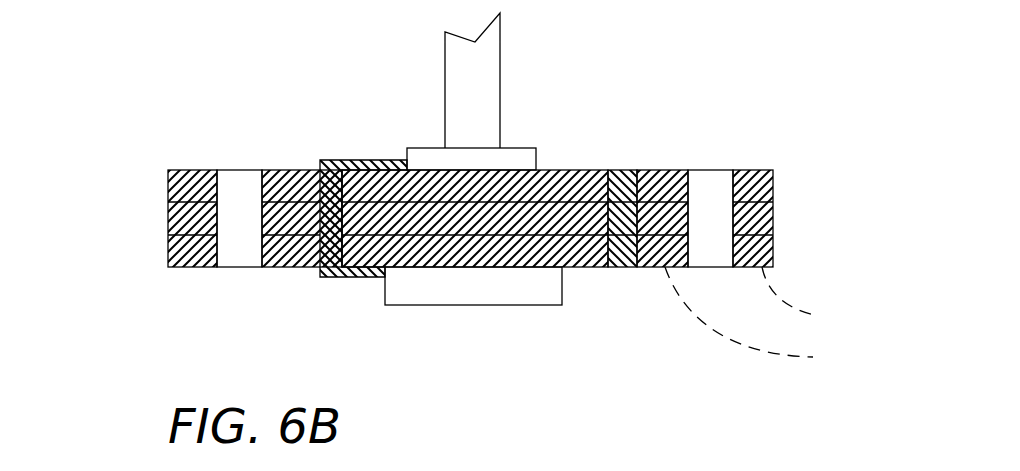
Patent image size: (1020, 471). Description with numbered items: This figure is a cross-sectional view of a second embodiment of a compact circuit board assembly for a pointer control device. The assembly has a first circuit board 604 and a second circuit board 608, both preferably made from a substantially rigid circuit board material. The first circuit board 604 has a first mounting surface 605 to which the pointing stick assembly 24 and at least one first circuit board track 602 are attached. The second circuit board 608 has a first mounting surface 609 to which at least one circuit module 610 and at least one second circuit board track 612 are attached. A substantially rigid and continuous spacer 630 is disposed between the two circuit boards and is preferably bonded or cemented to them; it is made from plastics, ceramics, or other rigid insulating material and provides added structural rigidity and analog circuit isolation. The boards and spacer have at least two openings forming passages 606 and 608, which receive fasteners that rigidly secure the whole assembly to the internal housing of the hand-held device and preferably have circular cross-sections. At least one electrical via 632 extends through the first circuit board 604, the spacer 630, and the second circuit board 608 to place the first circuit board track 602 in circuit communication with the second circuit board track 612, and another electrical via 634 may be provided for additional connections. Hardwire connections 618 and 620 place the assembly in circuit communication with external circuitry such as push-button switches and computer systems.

The shaft 24 is at (510, 86).
The first circuit board track 602 is at (388, 160).
The first circuit board 604 is at (588, 170).
The first mounting surface 605 is at (562, 170).
The passage 606 is at (705, 170).
The second circuit board 608 is at (248, 245).
The first mounting surface 609 is at (577, 267).
The circuit module 610 is at (468, 293).
The second circuit board track 612 is at (353, 278).
The hardwire connection 618 is at (772, 295).
The hardwire connection 620 is at (760, 358).
The spacer 630 is at (773, 204).
The electrical via 632 is at (322, 172).
The electrical via 634 is at (611, 267).